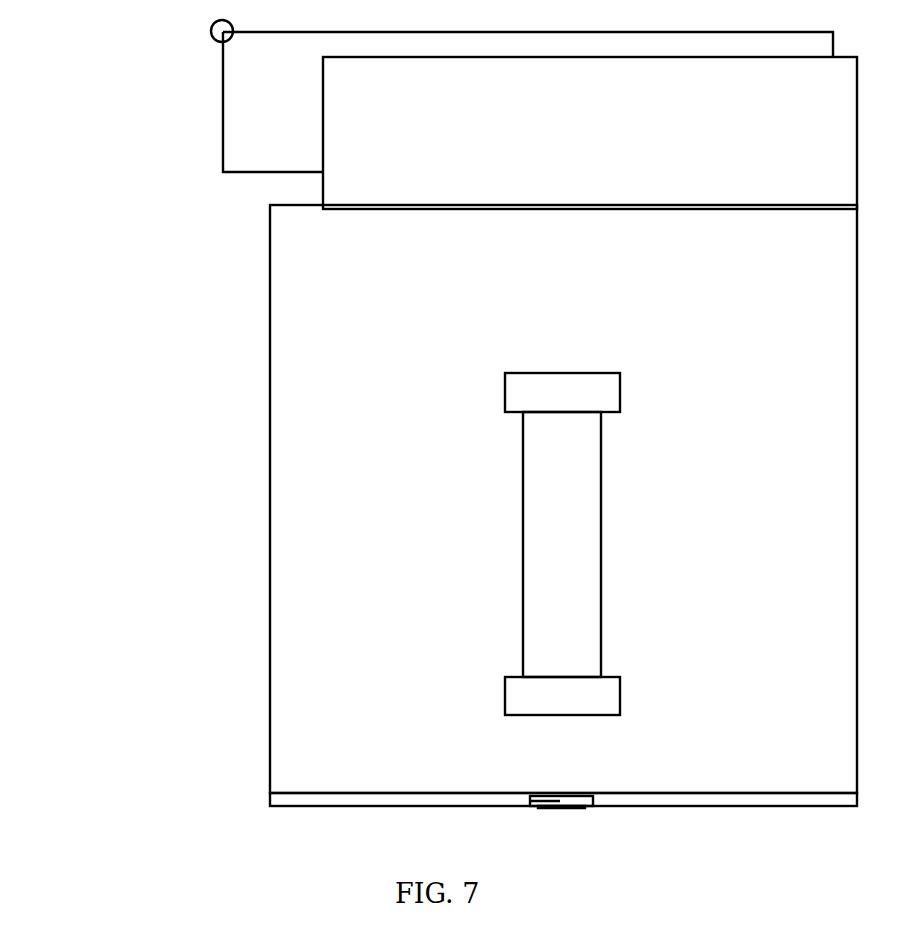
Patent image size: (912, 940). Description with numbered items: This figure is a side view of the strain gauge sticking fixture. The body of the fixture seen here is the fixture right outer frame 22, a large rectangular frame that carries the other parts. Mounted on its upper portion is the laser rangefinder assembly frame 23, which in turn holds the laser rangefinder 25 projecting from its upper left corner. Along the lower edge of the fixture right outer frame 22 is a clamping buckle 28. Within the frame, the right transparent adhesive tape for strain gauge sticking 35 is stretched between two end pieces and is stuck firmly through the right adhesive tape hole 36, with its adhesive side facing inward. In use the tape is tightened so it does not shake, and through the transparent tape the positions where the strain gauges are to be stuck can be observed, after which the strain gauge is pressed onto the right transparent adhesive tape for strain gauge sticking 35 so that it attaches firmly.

The fixture right outer frame 22 is at (318, 281).
The laser rangefinder assembly frame 23 is at (350, 184).
The laser rangefinder 25 is at (258, 117).
The clamping buckle 28 is at (268, 800).
The right transparent adhesive tape for strain gauge sticking 35 is at (558, 532).
The right adhesive tape hole 36 is at (562, 700).